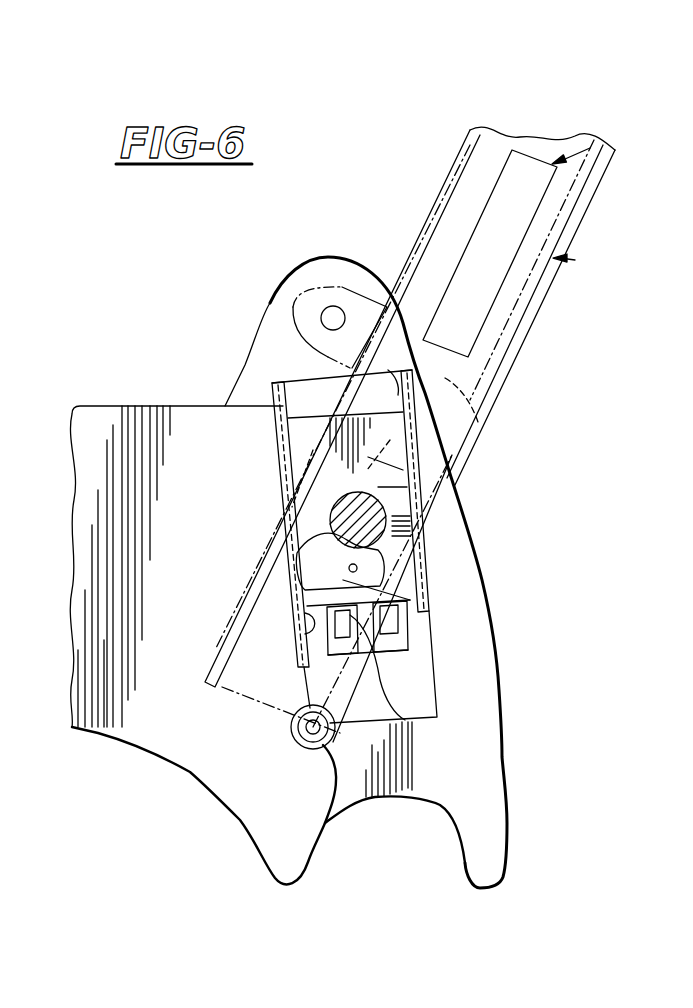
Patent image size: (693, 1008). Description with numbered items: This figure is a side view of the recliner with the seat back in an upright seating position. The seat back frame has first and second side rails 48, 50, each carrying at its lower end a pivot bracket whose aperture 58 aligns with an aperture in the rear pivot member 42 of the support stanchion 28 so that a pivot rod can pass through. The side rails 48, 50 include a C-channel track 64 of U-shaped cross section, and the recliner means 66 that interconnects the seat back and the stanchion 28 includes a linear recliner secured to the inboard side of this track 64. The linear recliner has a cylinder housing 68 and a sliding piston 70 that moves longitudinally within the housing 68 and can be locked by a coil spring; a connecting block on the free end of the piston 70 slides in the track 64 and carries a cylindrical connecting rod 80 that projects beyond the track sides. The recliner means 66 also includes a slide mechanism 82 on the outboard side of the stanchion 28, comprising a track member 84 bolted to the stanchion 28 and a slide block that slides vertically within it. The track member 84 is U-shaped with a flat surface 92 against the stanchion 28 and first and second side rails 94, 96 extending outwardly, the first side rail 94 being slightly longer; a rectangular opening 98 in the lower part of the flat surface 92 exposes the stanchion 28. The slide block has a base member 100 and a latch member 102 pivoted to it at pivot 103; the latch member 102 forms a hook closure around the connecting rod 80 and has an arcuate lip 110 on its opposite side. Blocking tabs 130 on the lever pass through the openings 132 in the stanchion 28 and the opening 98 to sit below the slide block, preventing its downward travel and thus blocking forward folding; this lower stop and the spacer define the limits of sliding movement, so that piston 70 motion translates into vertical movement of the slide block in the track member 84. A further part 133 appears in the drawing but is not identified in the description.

The support stanchion 28 is at (205, 773).
The rear pivot member 42 is at (315, 312).
The first side rail 48 is at (603, 183).
The second side rail 50 is at (452, 160).
The aperture 58 is at (337, 291).
The C-channel track 64 is at (575, 260).
The recliner means 66 is at (590, 148).
The cylinder housing 68 is at (483, 317).
The sliding piston 70 is at (473, 410).
The connecting rod 80 is at (463, 523).
The slide mechanism 82 is at (262, 443).
The track member 84 is at (292, 405).
The flat surface 92 is at (300, 385).
The first side rail 94 is at (268, 400).
The second side rail 96 is at (388, 370).
The rectangular opening 98 is at (415, 625).
The base member 100 is at (282, 455).
The latch member 102 is at (438, 567).
The pivot 103 is at (290, 560).
The arcuate lip 110 is at (303, 635).
The blocking tabs 130 is at (437, 620).
The opening 132 is at (327, 823).
The link 133 is at (380, 620).